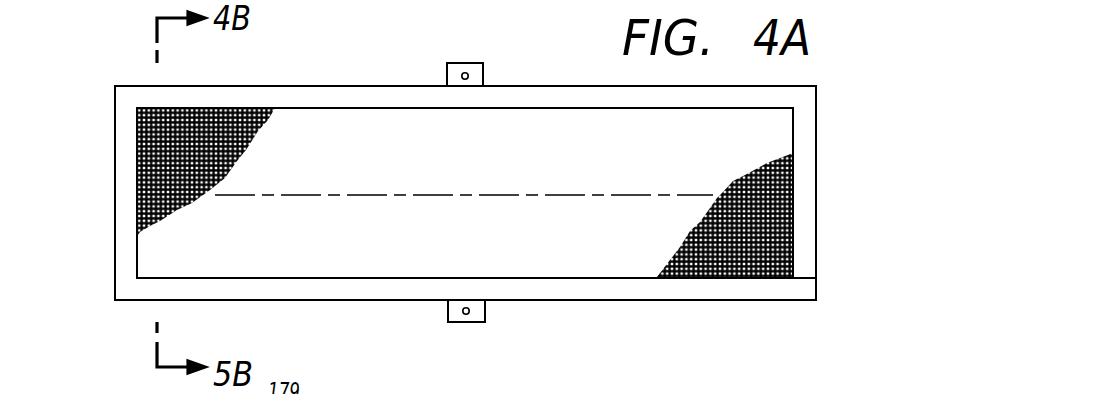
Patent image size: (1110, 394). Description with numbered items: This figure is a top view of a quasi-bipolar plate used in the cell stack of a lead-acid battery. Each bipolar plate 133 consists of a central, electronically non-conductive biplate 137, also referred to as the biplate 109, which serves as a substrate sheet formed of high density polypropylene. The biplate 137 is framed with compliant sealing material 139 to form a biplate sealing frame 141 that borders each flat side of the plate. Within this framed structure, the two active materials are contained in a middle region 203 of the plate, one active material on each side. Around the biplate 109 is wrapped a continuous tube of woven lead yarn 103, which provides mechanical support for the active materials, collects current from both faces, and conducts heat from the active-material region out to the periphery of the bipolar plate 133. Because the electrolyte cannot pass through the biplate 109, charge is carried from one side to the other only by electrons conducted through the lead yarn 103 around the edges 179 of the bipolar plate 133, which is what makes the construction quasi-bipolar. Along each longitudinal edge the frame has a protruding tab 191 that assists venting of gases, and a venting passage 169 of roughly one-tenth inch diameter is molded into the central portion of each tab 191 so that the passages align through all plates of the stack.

The woven lead yarn 103 is at (793, 248).
The biplate 109 is at (465, 308).
The bipolar plate 133 is at (549, 87).
The biplate 137 is at (367, 258).
The compliant sealing material 139 is at (810, 127).
The biplate sealing frame 141 is at (131, 152).
The venting passage 169 is at (464, 73).
The edge of the bipolar plate 179 is at (800, 272).
The protruding tab 191 is at (481, 63).
The middle region 203 is at (368, 136).